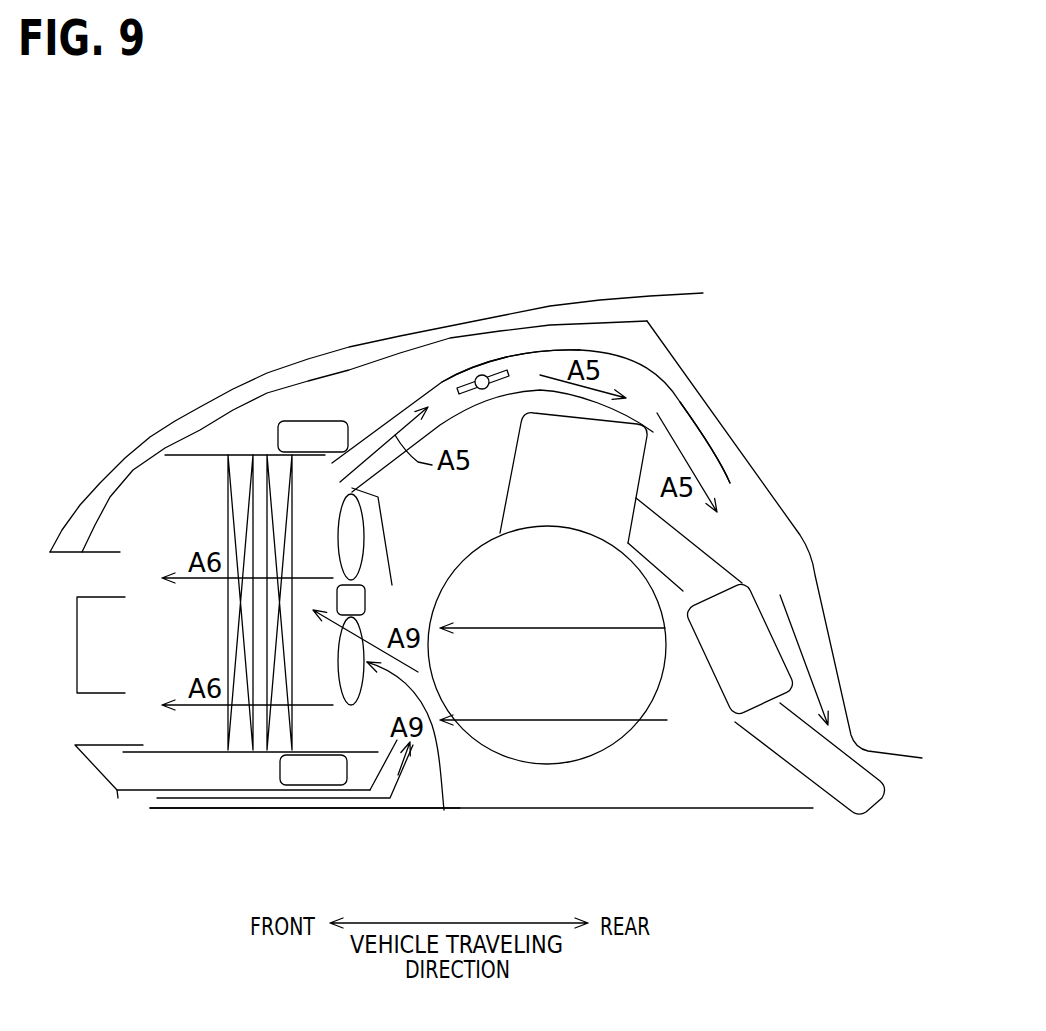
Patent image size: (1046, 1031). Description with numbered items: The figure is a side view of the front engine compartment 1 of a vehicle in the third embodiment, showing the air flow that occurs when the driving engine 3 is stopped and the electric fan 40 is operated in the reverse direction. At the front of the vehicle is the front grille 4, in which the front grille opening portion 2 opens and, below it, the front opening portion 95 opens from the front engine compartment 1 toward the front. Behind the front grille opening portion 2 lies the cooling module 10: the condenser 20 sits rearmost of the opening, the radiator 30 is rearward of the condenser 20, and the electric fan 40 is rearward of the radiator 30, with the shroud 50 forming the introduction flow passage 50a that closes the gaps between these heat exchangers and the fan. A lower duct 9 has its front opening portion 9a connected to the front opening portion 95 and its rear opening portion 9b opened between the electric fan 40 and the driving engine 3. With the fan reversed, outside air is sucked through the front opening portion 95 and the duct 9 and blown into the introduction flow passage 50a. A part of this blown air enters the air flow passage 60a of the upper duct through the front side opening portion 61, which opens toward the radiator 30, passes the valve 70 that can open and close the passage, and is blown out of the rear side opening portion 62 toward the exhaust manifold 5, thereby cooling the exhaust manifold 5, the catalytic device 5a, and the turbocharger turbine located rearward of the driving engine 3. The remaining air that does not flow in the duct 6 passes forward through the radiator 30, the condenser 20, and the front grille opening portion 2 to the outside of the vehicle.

The front engine compartment 1 is at (638, 777).
The front grille opening portion 2 is at (63, 572).
The driving engine 3 is at (556, 766).
The front grille 4 is at (98, 773).
The exhaust manifold 5 is at (670, 602).
The catalytic device 5a is at (750, 588).
The duct 6 is at (575, 342).
The duct 9 is at (260, 805).
The front opening portion 9a is at (137, 797).
The rear opening portion 9b is at (419, 746).
The cooling module 10 is at (201, 782).
The condenser 20 is at (238, 745).
The radiator 30 is at (277, 745).
The electric fan 40 is at (444, 810).
The shroud 50 is at (180, 753).
The introduction flow passage 50a is at (317, 557).
The air flow passage 60a is at (442, 388).
The front side opening portion 61 is at (340, 469).
The rear side opening portion 62 is at (697, 443).
The valve 70 is at (500, 376).
The front opening portion 95 is at (118, 792).